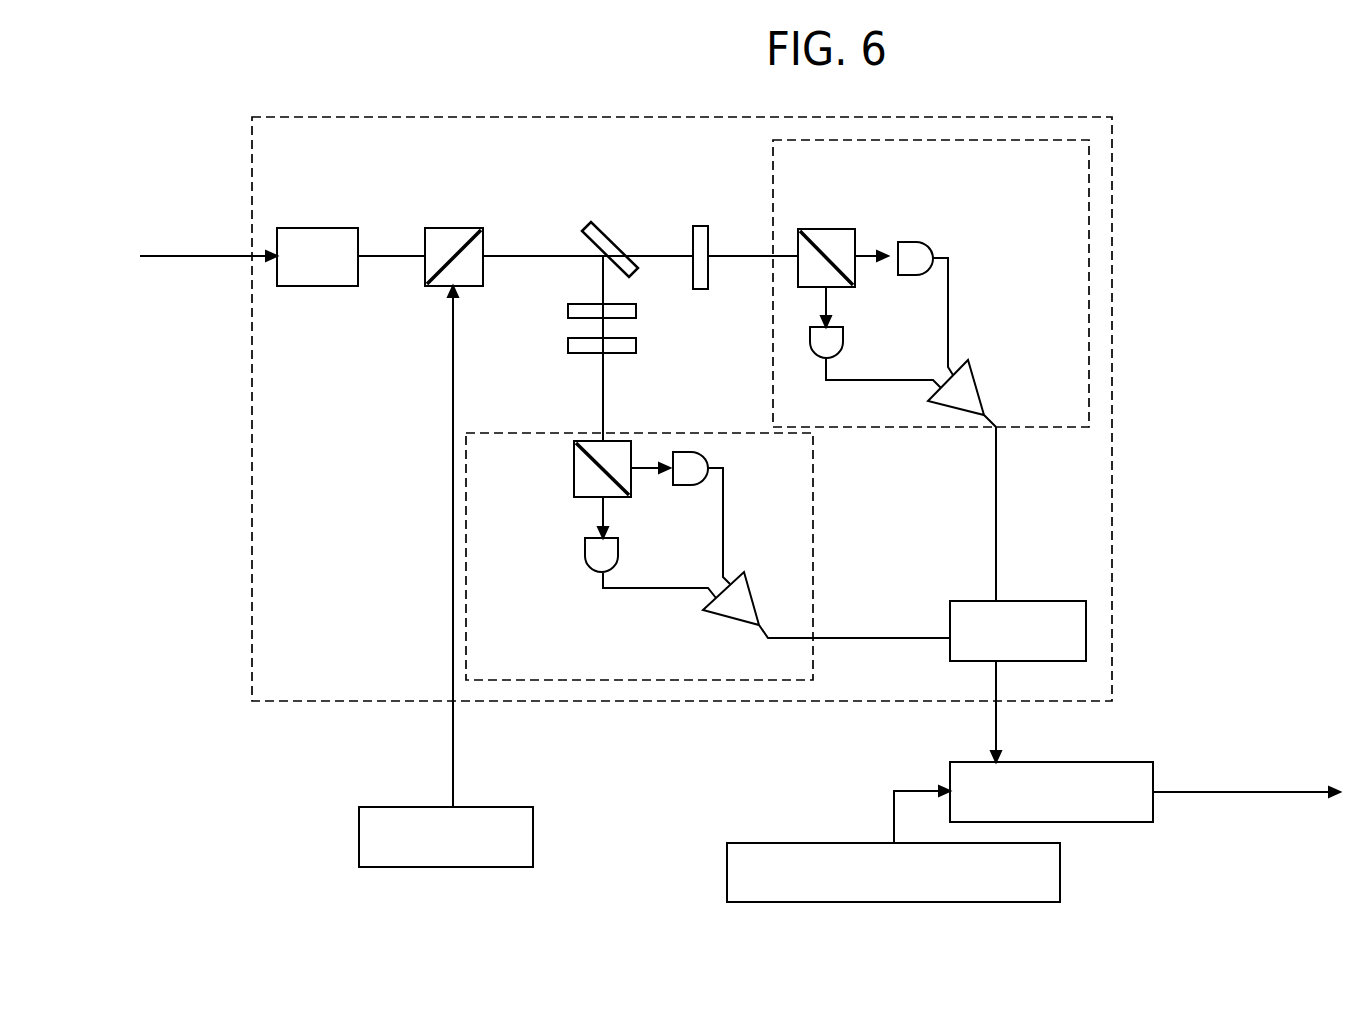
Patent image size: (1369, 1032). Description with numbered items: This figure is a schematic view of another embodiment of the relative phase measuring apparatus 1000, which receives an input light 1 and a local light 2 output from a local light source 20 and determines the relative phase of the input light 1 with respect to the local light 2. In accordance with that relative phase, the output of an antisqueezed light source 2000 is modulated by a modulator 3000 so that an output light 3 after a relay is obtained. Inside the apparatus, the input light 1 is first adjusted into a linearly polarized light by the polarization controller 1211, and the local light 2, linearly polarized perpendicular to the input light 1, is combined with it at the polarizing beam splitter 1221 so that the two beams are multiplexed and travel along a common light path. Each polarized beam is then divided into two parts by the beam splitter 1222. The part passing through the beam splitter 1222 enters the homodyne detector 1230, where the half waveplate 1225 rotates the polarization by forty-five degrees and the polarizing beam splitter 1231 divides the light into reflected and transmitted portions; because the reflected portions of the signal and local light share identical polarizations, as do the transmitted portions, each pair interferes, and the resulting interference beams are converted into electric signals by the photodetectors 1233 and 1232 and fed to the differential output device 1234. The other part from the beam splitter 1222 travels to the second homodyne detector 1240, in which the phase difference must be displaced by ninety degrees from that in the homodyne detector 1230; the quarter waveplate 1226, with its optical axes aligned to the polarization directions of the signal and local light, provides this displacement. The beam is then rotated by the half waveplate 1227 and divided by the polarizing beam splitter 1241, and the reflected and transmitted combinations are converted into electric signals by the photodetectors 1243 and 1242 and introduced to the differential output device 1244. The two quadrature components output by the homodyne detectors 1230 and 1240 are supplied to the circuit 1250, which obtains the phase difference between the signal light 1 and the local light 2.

The input light 1 is at (160, 262).
The local light 2 is at (453, 747).
The output light 3 is at (1230, 792).
The local light source 20 is at (359, 838).
The relative phase measuring apparatus 1000 is at (1112, 478).
The polarization controller 1211 is at (296, 228).
The polarizing beam splitter 1221 is at (450, 228).
The beam splitter 1222 is at (587, 226).
The half waveplate 1225 is at (700, 226).
The λ/4 waveplate 1226 is at (568, 311).
The half waveplate 1227 is at (568, 346).
The homodyne detector 1230 is at (1089, 282).
The polarizing beam splitter 1231 is at (848, 229).
The photodetector 1232 is at (920, 242).
The photodetector 1233 is at (846, 338).
The differential output device 1234 is at (965, 362).
The homodyne detector 1240 is at (570, 680).
The polarizing beam splitter 1241 is at (573, 480).
The photodetector 1242 is at (590, 575).
The photodetector 1243 is at (682, 487).
The differential output device 1244 is at (716, 618).
The circuit 1250 is at (1086, 608).
The antisqueezed light source 2000 is at (727, 873).
The modulator 3000 is at (1102, 762).